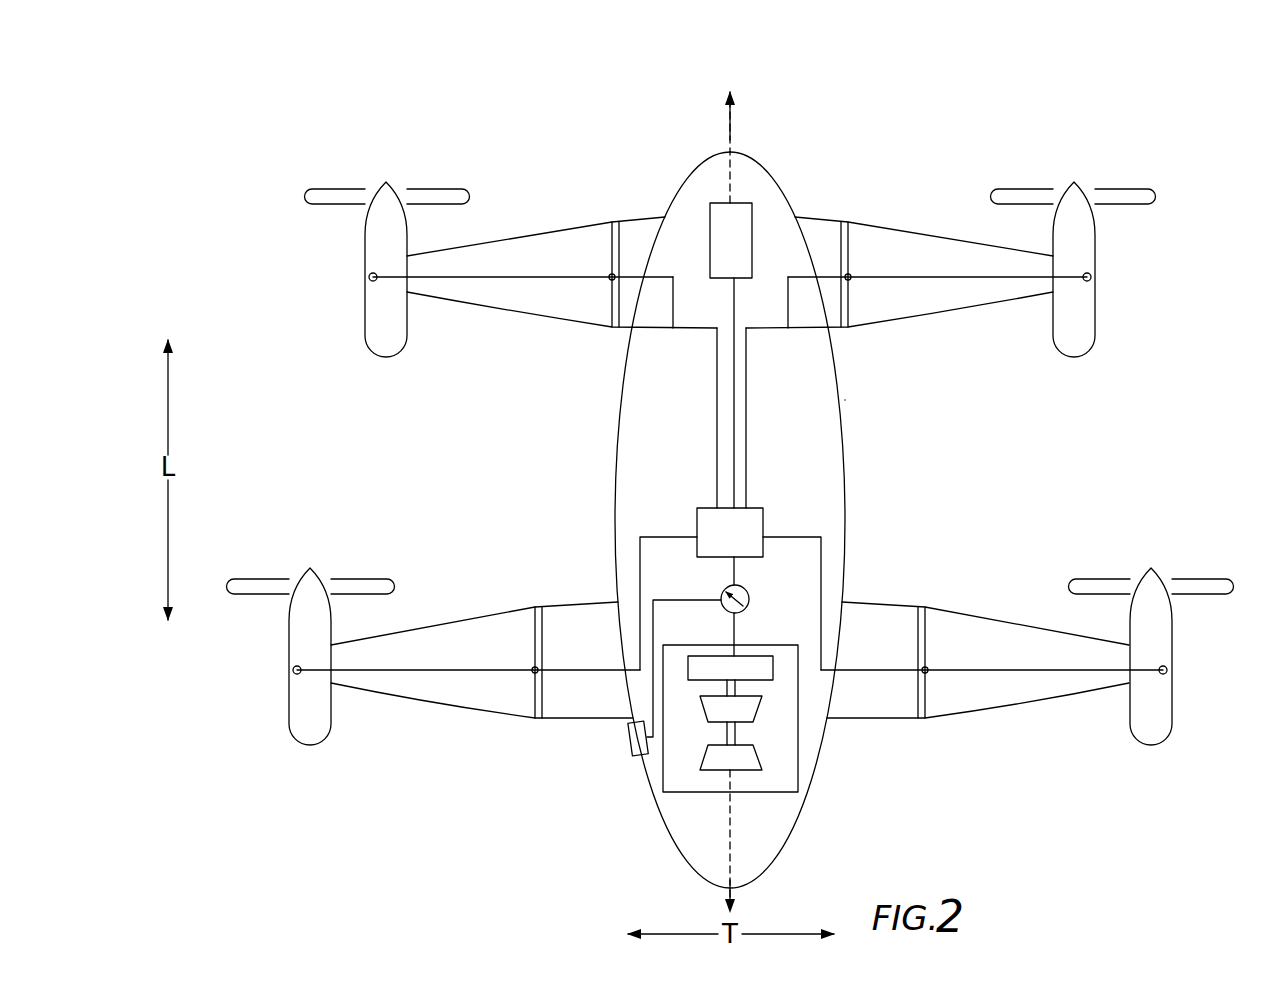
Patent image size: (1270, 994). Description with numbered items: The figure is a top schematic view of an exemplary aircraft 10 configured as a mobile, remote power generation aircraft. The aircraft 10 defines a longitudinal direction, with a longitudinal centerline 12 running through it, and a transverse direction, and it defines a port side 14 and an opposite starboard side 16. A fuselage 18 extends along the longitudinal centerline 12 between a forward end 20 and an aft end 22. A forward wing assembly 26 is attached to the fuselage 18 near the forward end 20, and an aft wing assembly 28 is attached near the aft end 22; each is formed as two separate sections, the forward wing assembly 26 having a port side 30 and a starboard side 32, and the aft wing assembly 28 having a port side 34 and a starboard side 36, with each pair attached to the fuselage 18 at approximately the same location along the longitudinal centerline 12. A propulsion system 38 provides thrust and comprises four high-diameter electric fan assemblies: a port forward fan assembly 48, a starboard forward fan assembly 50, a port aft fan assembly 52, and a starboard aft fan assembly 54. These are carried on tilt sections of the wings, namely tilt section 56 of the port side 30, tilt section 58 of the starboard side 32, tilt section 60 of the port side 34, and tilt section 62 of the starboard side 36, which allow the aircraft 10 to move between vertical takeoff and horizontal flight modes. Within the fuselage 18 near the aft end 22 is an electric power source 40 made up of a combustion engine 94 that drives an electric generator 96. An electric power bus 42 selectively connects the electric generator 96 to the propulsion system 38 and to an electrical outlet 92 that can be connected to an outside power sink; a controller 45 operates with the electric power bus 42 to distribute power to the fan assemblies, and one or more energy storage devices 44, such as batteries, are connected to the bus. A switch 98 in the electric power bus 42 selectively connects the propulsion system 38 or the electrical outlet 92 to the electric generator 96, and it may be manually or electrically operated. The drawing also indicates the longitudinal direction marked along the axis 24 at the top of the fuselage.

The aircraft 10 is at (908, 70).
The longitudinal centerline 12 is at (733, 130).
The port side 14 is at (418, 454).
The starboard side 16 is at (1045, 455).
The fuselage 18 is at (846, 432).
The forward end 20 is at (778, 125).
The aft end 22 is at (787, 883).
The longitudinal direction 24 is at (731, 100).
The forward wing assembly 26 is at (1098, 160).
The aft wing assembly 28 is at (1093, 748).
The port side of forward wing assembly 30 is at (420, 185).
The starboard side of forward wing assembly 32 is at (1041, 182).
The port side of aft wing assembly 34 is at (520, 795).
The starboard side of aft wing assembly 36 is at (948, 795).
The propulsion system 38 is at (528, 93).
The electric power source 40 is at (656, 780).
The electric power bus 42 is at (630, 277).
The energy storage device 44 is at (740, 230).
The controller 45 is at (766, 518).
The port forward fan assembly 48 is at (375, 248).
The starboard forward fan assembly 50 is at (1085, 253).
The port aft fan assembly 52 is at (295, 690).
The starboard aft fan assembly 54 is at (1166, 632).
The tilt section 56 is at (483, 305).
The tilt section 58 is at (985, 305).
The tilt section 60 is at (405, 695).
The tilt section 62 is at (1058, 695).
The electrical outlet 92 is at (630, 742).
The combustion engine 94 is at (772, 738).
The electric generator 96 is at (744, 656).
The switch 98 is at (720, 592).